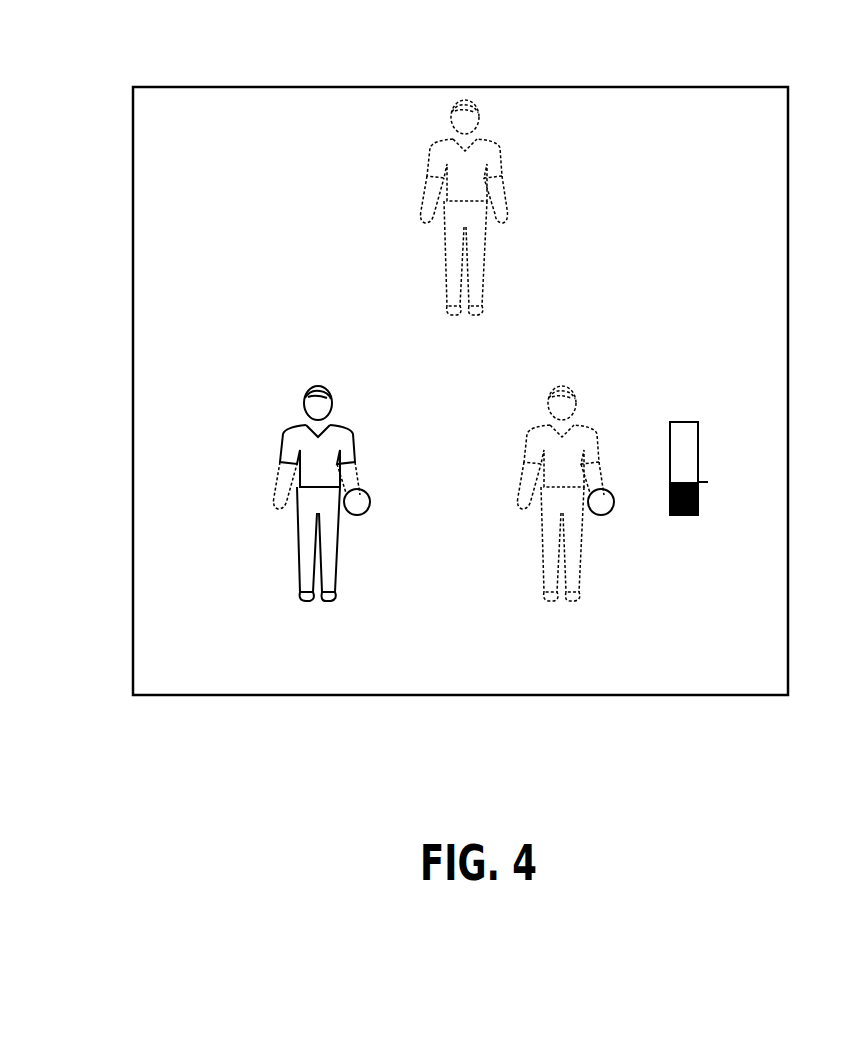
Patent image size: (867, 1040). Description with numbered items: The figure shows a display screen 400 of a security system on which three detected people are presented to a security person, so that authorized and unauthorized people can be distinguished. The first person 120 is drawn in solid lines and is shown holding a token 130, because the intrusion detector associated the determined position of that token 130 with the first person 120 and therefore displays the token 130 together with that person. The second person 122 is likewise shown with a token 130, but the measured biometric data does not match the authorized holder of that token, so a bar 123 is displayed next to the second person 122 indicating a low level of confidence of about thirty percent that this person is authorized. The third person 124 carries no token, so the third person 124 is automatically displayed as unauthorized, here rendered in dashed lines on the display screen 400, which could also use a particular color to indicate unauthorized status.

The display screen 400 is at (120, 50).
The person (P1) 120 is at (352, 437).
The person (P2) 122 is at (570, 420).
The person (P3) 124 is at (498, 152).
The bar 123 is at (698, 436).
The token 130 is at (370, 503).